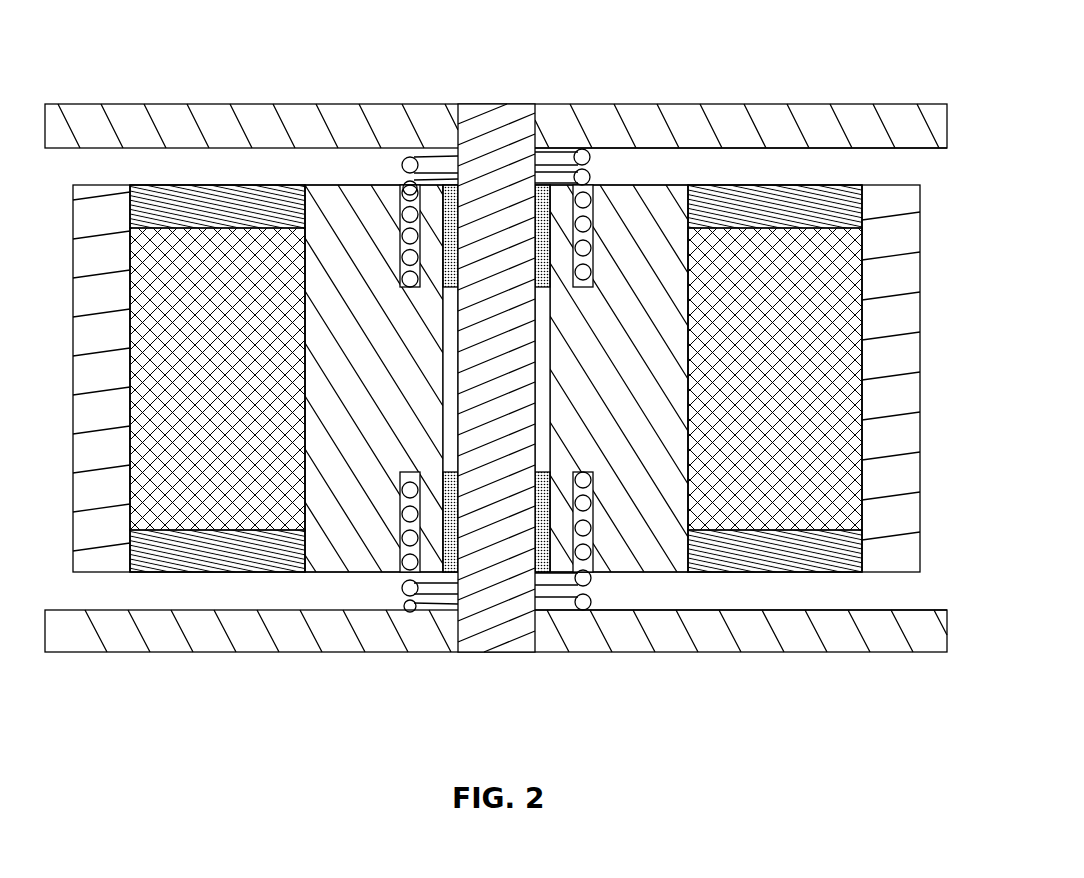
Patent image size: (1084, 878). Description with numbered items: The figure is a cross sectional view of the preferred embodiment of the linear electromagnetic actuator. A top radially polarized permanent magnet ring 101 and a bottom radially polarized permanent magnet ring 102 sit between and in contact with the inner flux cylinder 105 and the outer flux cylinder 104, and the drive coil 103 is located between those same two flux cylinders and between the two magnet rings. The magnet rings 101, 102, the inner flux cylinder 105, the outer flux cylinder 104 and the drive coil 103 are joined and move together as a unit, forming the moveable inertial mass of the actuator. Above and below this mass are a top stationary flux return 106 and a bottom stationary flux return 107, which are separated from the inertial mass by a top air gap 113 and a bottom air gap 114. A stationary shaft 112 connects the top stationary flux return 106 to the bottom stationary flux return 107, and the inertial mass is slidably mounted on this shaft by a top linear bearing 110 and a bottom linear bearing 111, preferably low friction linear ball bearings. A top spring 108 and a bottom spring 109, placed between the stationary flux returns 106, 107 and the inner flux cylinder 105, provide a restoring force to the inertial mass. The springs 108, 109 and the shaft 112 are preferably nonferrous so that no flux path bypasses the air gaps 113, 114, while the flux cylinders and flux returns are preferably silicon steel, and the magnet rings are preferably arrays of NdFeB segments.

The top radially polarized permanent magnet ring 101 is at (233, 203).
The bottom radially polarized permanent magnet ring 102 is at (267, 562).
The drive coil 103 is at (160, 507).
The outer flux cylinder 104 is at (82, 202).
The inner flux cylinder 105 is at (370, 217).
The top stationary flux return 106 is at (213, 137).
The bottom stationary flux return 107 is at (113, 628).
The top spring 108 is at (423, 155).
The bottom spring 109 is at (442, 592).
The top linear bearing 110 is at (547, 200).
The bottom linear bearing 111 is at (540, 565).
The stationary shaft 112 is at (518, 628).
The top air gap 113 is at (751, 158).
The bottom air gap 114 is at (722, 603).